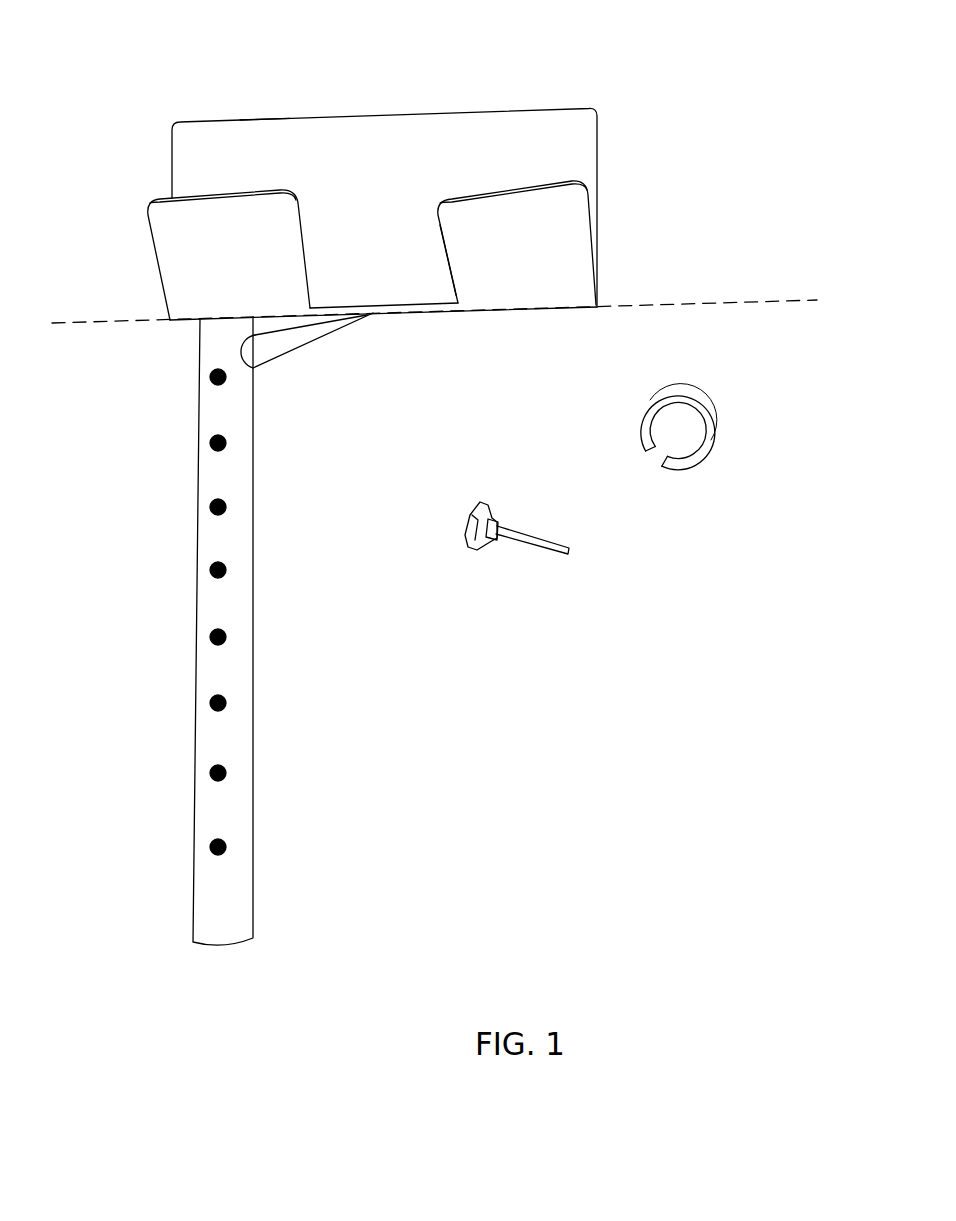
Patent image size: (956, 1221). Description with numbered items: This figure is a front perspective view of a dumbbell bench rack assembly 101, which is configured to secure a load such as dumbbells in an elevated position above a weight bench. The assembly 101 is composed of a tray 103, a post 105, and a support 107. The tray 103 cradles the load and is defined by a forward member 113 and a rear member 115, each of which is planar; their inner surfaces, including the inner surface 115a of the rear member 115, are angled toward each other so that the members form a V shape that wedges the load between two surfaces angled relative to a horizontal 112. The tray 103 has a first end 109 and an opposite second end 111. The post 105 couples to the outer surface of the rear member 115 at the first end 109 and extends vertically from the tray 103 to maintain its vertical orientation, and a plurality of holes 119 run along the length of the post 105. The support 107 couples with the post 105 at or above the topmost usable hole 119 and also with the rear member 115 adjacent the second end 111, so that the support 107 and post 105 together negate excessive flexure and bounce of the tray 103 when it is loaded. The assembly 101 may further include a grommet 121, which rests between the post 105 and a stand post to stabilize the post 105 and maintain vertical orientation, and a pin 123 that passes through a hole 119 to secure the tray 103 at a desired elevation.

The dumbbell bench rack assembly 101 is at (527, 765).
The tray 103 is at (518, 85).
The post 105 is at (253, 583).
The support 107 is at (283, 357).
The first end 109 is at (104, 216).
The second end 111 is at (634, 212).
The horizontal 112 is at (737, 304).
The forward member 113 is at (454, 233).
The rear member 115 is at (487, 118).
The inner surface 115a is at (250, 129).
The holes 119 is at (213, 703).
The grommet 121 is at (667, 400).
The pin 123 is at (480, 505).